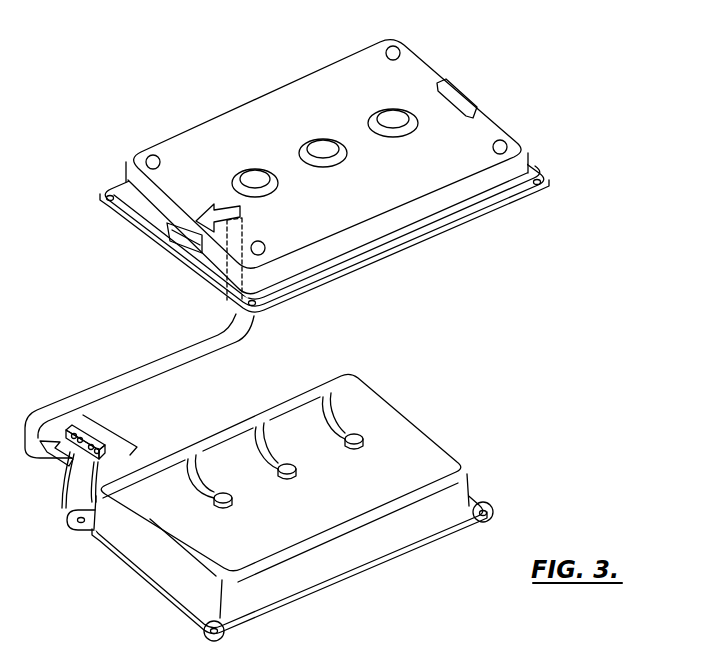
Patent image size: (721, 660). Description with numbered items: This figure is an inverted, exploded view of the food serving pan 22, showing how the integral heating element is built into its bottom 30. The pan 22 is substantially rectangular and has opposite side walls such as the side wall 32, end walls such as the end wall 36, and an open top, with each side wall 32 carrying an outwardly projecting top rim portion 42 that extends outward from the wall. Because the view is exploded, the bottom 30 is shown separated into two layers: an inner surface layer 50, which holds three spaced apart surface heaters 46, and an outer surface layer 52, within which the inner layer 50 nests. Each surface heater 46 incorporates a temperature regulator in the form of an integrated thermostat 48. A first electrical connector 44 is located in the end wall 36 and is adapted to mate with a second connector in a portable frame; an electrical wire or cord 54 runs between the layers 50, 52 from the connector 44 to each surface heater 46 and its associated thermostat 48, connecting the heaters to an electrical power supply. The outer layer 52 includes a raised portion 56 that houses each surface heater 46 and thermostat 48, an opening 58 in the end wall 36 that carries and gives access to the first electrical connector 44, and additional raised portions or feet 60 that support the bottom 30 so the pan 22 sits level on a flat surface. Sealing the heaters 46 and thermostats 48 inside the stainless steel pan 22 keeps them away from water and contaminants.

The food serving pan 22 is at (347, 335).
The bottom 30 is at (340, 164).
The side wall 32 is at (455, 503).
The end wall 36 is at (122, 195).
The top rim portion 42 is at (377, 258).
The first electrical connector 44 is at (70, 470).
The surface heater 46 is at (352, 435).
The thermostat 48 is at (368, 443).
The inner surface layer 50 is at (285, 479).
The outer surface layer 52 is at (294, 164).
The electrical wire or cord 54 is at (224, 445).
The raised portion 56 is at (397, 118).
The opening 58 is at (170, 240).
The feet 60 is at (158, 153).